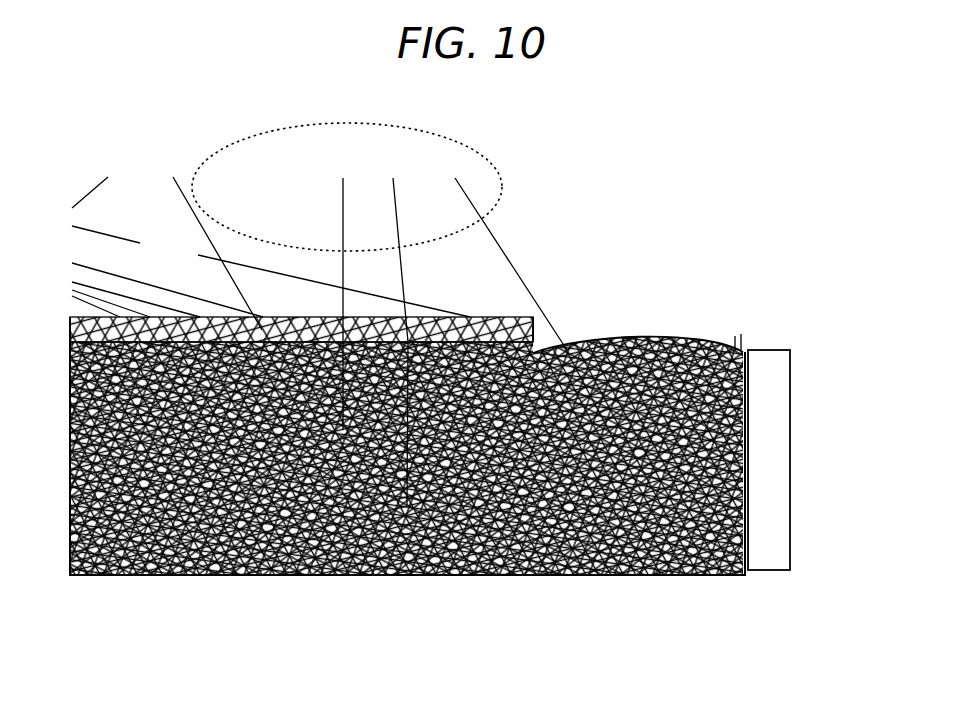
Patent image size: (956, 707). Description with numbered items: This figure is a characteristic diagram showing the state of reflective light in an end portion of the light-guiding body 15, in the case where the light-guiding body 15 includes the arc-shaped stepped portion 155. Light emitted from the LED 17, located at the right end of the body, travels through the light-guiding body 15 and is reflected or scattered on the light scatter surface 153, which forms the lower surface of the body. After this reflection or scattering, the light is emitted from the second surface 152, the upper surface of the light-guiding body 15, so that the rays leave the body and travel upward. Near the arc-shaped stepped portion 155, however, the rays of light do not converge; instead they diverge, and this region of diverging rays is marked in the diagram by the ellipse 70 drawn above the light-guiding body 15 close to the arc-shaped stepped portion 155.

The ellipse 70 is at (450, 140).
The second surface 152 is at (172, 317).
The light scatter surface 153 is at (512, 575).
The arc-shaped stepped portion 155 is at (653, 335).
The light-guiding body 15 is at (376, 588).
The LED 17 is at (770, 452).